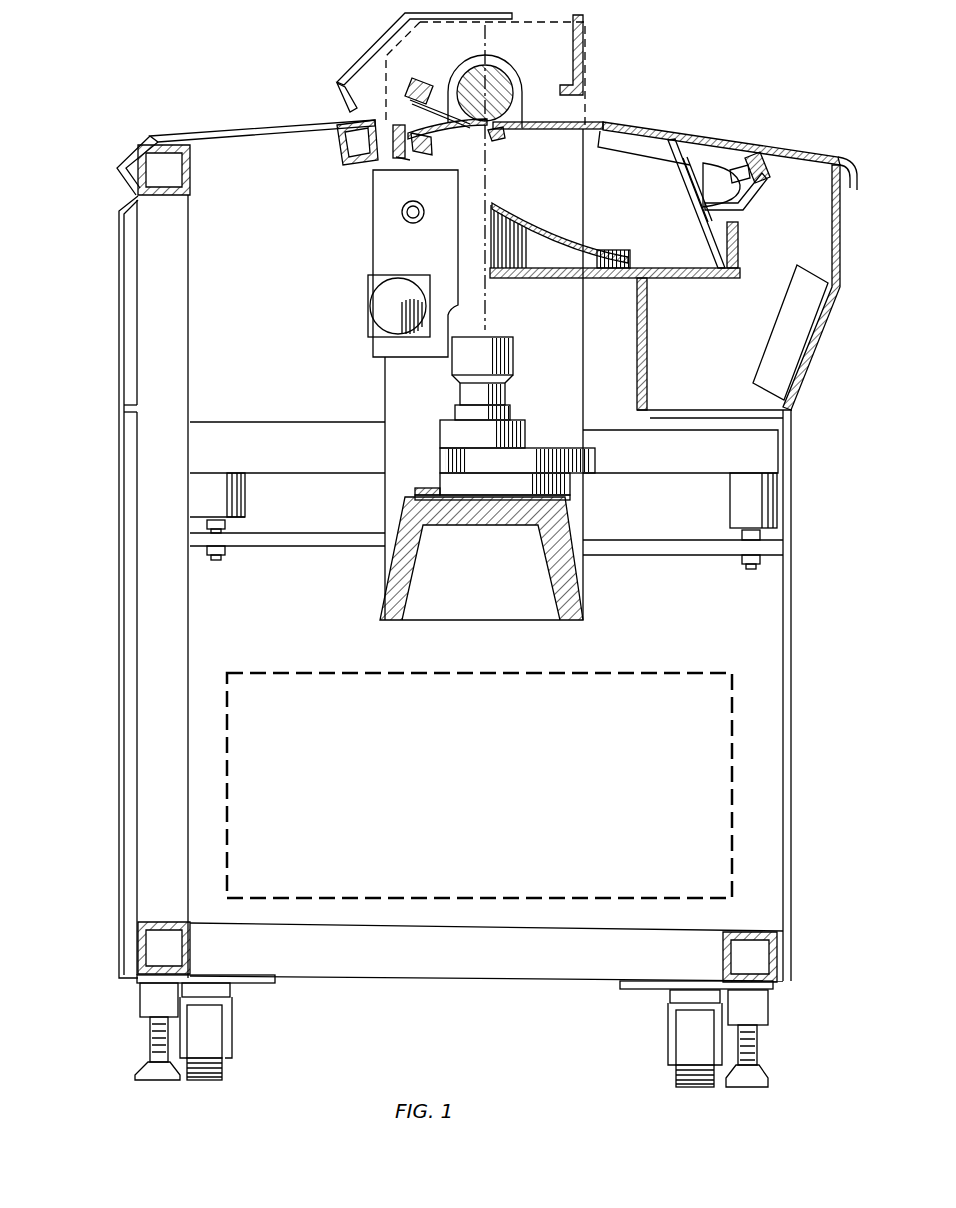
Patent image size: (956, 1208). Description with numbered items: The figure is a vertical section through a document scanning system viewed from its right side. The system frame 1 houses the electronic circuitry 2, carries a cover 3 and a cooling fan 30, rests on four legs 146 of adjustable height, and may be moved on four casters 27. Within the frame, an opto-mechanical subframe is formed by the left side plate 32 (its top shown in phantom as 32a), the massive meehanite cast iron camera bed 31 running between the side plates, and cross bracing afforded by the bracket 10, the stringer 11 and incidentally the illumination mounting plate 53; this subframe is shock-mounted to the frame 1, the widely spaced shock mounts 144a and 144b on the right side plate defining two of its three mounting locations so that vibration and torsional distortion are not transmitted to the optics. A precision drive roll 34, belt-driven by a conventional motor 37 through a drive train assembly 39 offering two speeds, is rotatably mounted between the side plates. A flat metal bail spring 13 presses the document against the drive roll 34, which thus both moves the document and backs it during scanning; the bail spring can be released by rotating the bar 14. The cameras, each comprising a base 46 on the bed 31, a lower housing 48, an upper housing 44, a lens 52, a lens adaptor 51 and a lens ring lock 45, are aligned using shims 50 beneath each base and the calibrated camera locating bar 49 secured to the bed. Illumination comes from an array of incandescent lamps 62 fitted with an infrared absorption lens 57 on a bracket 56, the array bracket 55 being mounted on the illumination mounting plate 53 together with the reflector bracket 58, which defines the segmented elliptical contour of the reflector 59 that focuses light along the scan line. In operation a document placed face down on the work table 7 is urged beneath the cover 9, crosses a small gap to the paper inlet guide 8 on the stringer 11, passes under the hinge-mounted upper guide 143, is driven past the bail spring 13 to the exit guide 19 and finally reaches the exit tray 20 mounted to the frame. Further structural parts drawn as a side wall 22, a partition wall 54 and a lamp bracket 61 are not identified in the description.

The system frame 1 is at (140, 182).
The electronic circuitry 2 is at (497, 797).
The cover 3 is at (119, 783).
The work table 7 is at (150, 138).
The paper inlet guide 8 is at (398, 124).
The cover 9 is at (343, 92).
The bracket 10 is at (584, 60).
The stringer 11 is at (396, 156).
The bail spring 13 is at (452, 125).
The bar 14 is at (422, 148).
The exit guide 19 is at (567, 120).
The exit tray 20 is at (740, 142).
The hopper side wall 22 is at (843, 260).
The casters 27 is at (212, 1043).
The cooling fan 30 is at (818, 302).
The camera bed 31 is at (567, 580).
The left side plate 32 is at (585, 340).
The top of left side plate 32a is at (583, 25).
The precision drive roll 34 is at (497, 75).
The motor 37 is at (395, 300).
The drive train assembly 39 is at (385, 210).
The upper housing 44 is at (526, 442).
The lens ring lock 45 is at (510, 418).
The camera base 46 is at (565, 486).
The lower housing 48 is at (590, 455).
The calibrated camera locating bar 49 is at (425, 490).
The shims 50 is at (572, 500).
The lens adaptor 51 is at (507, 388).
The lens 52 is at (513, 348).
The illumination mounting plate 53 is at (658, 280).
The partition wall 54 is at (648, 342).
The array bracket 55 is at (740, 248).
The bracket 56 is at (685, 184).
The infrared absorption lens 57 is at (703, 208).
The reflector bracket 58 is at (527, 258).
The reflector 59 is at (520, 232).
The bracket 61 is at (742, 204).
The incandescent lamps 62 is at (750, 186).
The upper guide 143 is at (440, 118).
The shock mount 144a is at (244, 512).
The shock mount 144b is at (745, 512).
The legs 146 is at (152, 1040).